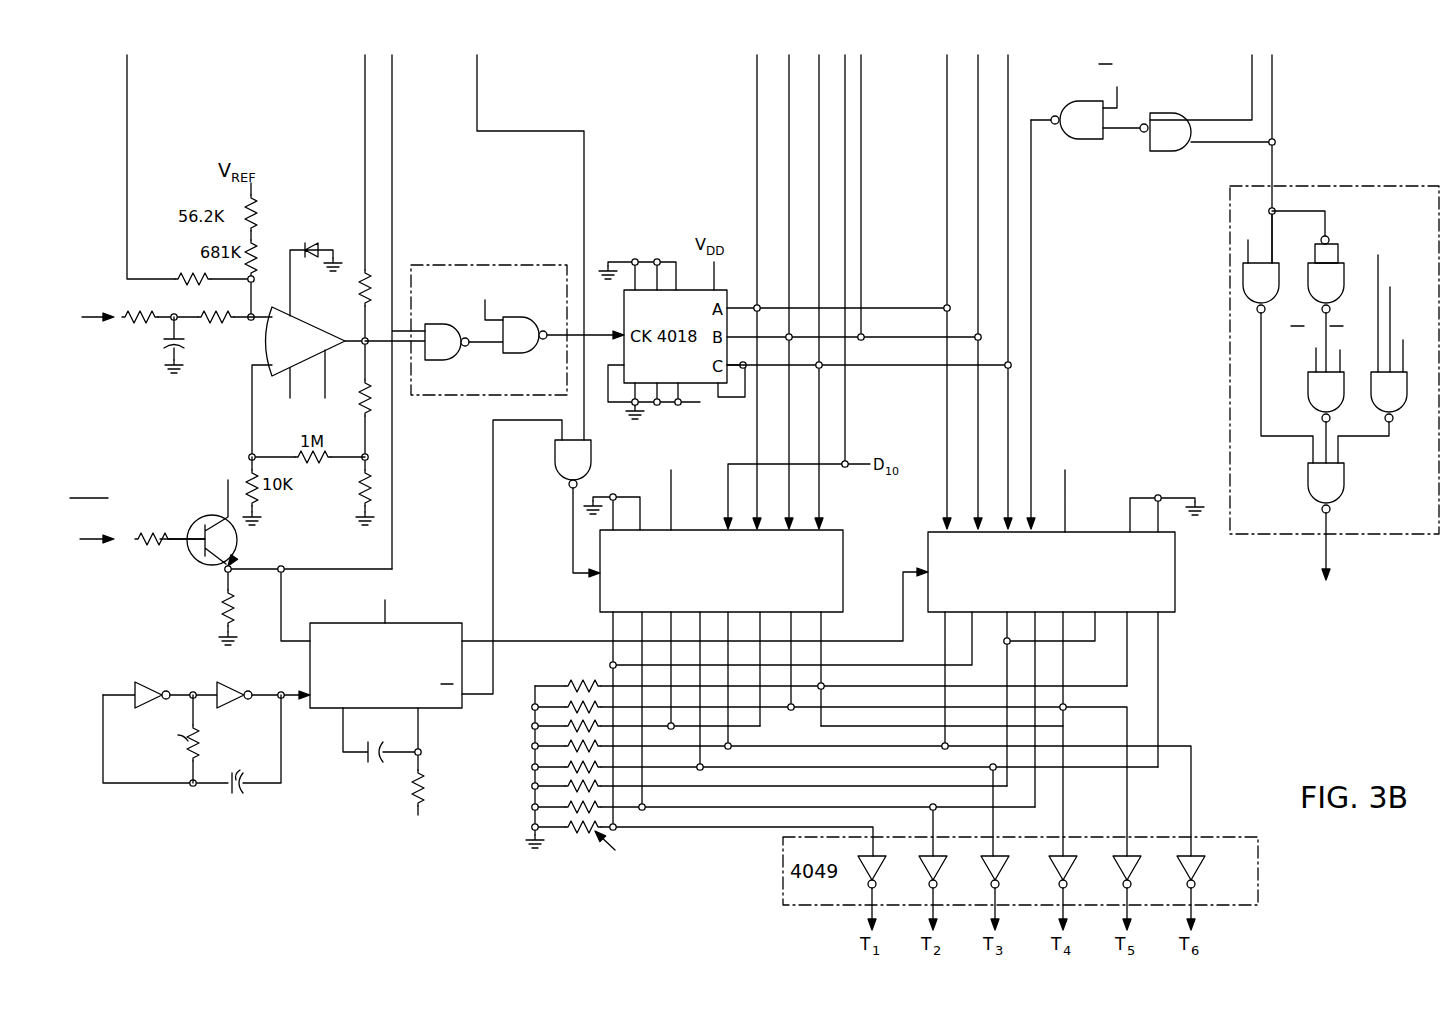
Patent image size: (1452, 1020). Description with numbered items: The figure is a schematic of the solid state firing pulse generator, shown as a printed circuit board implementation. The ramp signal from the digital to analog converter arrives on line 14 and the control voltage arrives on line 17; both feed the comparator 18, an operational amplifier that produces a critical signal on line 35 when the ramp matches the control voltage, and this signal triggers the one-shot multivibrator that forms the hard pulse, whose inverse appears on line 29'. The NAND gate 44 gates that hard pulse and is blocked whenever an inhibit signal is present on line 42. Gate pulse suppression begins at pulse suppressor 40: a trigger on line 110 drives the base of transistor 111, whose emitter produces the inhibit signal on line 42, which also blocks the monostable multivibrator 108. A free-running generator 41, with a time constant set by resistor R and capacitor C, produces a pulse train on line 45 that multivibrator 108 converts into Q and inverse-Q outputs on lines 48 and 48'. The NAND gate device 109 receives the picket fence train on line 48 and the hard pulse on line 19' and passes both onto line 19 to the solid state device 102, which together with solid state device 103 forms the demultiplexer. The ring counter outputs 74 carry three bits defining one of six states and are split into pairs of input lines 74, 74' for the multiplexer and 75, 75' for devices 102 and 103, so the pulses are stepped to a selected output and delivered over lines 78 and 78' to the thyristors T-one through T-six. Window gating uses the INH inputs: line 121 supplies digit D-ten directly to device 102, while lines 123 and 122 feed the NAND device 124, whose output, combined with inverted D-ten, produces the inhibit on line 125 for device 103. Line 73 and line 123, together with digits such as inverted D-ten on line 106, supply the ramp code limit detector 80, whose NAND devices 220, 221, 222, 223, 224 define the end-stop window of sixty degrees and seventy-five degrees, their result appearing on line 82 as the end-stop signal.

The line 14 is at (129, 62).
The line 17 is at (88, 318).
The comparator 18 is at (348, 344).
The line 19 is at (568, 532).
The line 19' is at (530, 246).
The line 29' is at (414, 310).
The line 35 is at (365, 75).
The pulse suppressor 40 is at (90, 479).
The free-running generator 41 is at (148, 745).
The line 42 is at (281, 569).
The NAND gate 44 is at (520, 266).
The line 45 is at (253, 692).
The line 48 is at (512, 557).
The line 48' is at (695, 602).
The line 73 is at (1275, 172).
The counter outputs 74 is at (840, 290).
The input lines 74' is at (890, 288).
The input lines 75 is at (767, 432).
The input lines 75' is at (948, 432).
The lines 78 is at (878, 741).
The lines 78' is at (1086, 658).
The ramp code limit detector 80 is at (1228, 198).
The line 82 is at (1332, 568).
The solid state device 102 is at (845, 533).
The solid state device 103 is at (1177, 548).
The line 106 is at (1314, 366).
The monostable multivibrator 108 is at (346, 624).
The NAND gate device 109 is at (553, 459).
The line 110 is at (94, 540).
The transistor 111 is at (214, 525).
The line 121 is at (862, 68).
The line 122 is at (1250, 72).
The line 123 is at (1274, 68).
The NAND device 124 is at (1178, 105).
The line 125 is at (1032, 322).
The NAND device 220 is at (1286, 256).
The NAND device 221 is at (1308, 286).
The NAND device 222 is at (1310, 395).
The NAND device 223 is at (1372, 397).
The NAND device 224 is at (1308, 471).